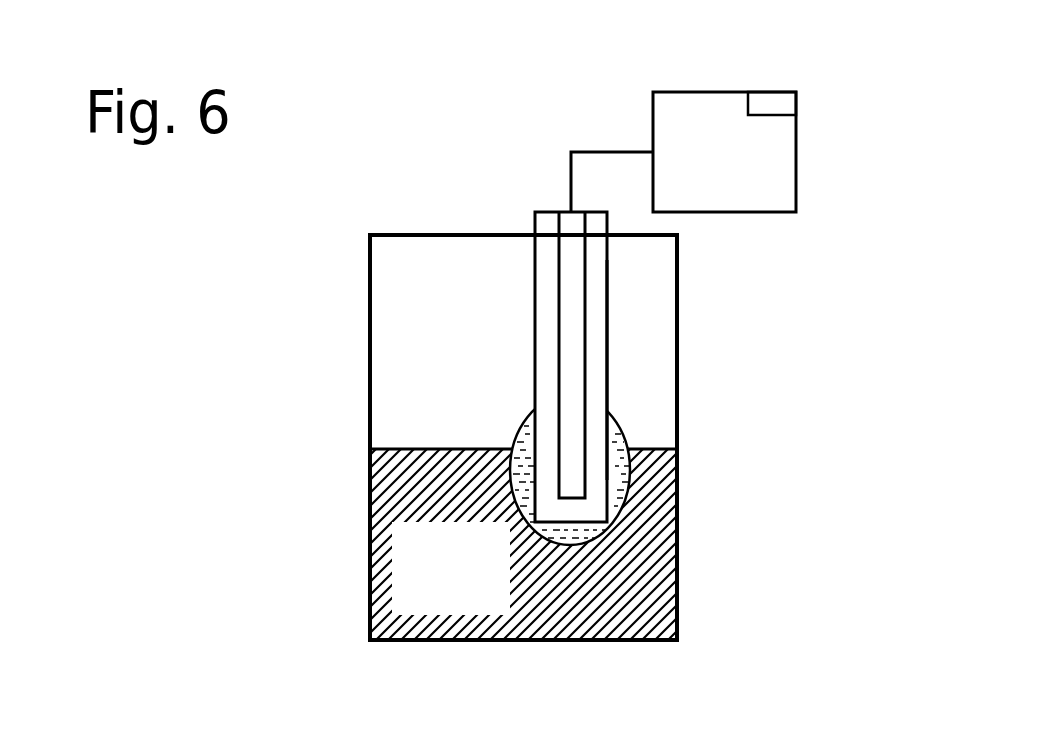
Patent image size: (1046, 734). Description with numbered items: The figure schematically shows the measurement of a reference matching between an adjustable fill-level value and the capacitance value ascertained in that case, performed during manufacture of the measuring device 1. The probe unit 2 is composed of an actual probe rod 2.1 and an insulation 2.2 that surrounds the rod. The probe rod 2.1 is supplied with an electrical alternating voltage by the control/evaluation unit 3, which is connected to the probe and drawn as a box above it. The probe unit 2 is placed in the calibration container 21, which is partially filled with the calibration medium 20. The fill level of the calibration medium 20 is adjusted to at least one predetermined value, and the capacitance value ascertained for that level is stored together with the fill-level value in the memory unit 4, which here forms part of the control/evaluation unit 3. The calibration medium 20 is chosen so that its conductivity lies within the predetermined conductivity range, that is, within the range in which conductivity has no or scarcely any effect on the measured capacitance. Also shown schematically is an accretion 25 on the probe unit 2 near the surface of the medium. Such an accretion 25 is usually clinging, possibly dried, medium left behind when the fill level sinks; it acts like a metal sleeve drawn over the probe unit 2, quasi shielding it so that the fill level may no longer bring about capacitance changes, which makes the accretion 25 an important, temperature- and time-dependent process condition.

The measuring device 1 is at (560, 115).
The probe unit 2 is at (630, 367).
The probe rod 2.1 is at (583, 330).
The insulation 2.2 is at (607, 355).
The control/evaluation unit 3 is at (695, 193).
The memory unit 4 is at (773, 93).
The calibration medium 20 is at (410, 600).
The calibration container 21 is at (368, 423).
The accretion 25 is at (628, 473).